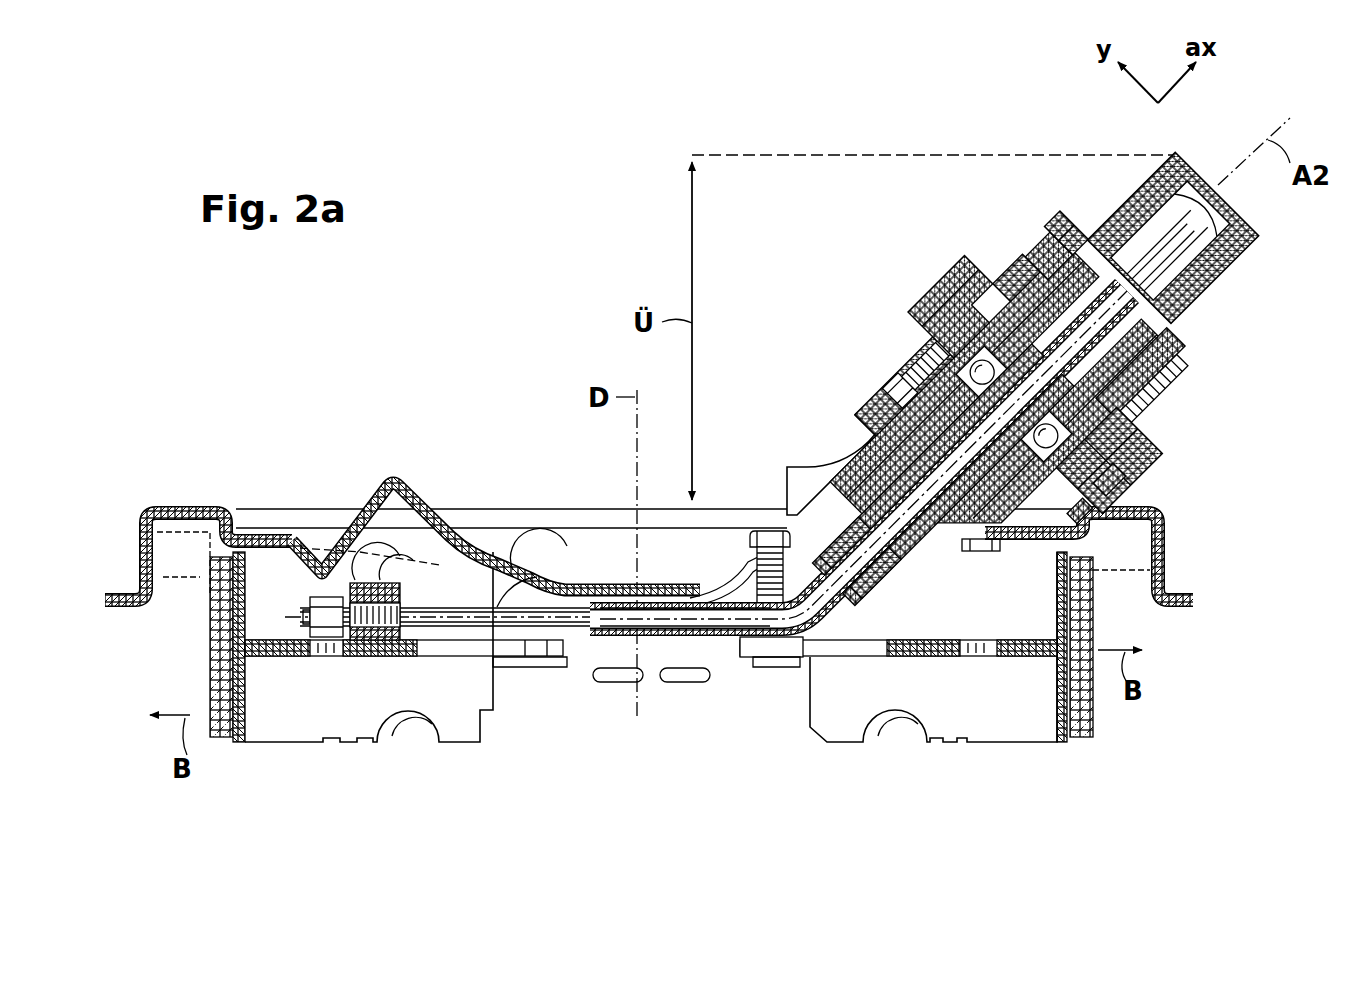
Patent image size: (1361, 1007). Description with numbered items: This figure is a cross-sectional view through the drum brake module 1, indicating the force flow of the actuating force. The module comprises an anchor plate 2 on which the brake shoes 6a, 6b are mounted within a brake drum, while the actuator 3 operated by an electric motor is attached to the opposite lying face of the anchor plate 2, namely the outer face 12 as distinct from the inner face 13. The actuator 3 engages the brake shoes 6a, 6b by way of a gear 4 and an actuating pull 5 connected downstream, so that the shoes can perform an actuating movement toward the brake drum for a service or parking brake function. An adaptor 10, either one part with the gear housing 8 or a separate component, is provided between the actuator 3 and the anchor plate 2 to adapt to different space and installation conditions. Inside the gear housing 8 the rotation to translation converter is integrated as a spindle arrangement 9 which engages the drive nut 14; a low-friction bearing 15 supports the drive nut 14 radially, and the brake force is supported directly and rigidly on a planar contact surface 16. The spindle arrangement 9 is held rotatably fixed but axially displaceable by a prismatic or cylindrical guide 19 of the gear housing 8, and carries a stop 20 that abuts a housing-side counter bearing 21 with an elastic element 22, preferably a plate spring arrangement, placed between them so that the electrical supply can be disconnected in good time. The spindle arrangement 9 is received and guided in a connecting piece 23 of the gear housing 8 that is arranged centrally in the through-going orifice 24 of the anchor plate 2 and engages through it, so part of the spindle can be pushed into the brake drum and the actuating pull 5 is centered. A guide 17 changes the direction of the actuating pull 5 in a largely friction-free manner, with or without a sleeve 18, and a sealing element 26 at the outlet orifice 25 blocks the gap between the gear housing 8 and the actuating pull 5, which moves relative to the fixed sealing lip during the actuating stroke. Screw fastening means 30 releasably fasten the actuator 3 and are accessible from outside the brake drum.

The drum brake module 1 is at (527, 372).
The anchor plate 2 is at (190, 510).
The actuator 3 is at (958, 252).
The gear 4 is at (946, 290).
The actuating pull 5 is at (590, 622).
The brake shoe 6a is at (243, 692).
The brake shoe 6b is at (1060, 705).
The gear housing 8 is at (1166, 455).
The spindle arrangement 9 is at (1128, 380).
The adaptor 10 is at (820, 500).
The outer face 12 is at (280, 508).
The inner face 13 is at (182, 528).
The drive nut 14 is at (1085, 290).
The bearing 15 is at (918, 345).
The contact surface 16 is at (1128, 470).
The guide 17 is at (677, 658).
The sleeve 18 is at (703, 593).
The guide 19 is at (1205, 215).
The stop 20 is at (1175, 340).
The counter bearing 21 is at (1030, 285).
The elastic element 22 is at (1070, 275).
The connecting piece 23 is at (892, 442).
The through-going orifice 24 is at (975, 553).
The outlet orifice 25 is at (870, 582).
The sealing element 26 is at (810, 600).
The fastening means 30 is at (898, 360).